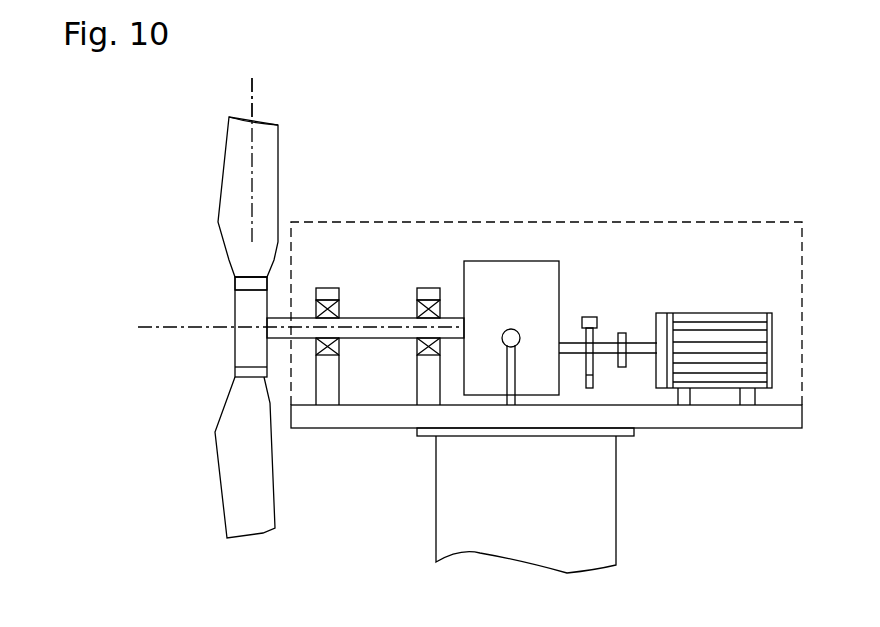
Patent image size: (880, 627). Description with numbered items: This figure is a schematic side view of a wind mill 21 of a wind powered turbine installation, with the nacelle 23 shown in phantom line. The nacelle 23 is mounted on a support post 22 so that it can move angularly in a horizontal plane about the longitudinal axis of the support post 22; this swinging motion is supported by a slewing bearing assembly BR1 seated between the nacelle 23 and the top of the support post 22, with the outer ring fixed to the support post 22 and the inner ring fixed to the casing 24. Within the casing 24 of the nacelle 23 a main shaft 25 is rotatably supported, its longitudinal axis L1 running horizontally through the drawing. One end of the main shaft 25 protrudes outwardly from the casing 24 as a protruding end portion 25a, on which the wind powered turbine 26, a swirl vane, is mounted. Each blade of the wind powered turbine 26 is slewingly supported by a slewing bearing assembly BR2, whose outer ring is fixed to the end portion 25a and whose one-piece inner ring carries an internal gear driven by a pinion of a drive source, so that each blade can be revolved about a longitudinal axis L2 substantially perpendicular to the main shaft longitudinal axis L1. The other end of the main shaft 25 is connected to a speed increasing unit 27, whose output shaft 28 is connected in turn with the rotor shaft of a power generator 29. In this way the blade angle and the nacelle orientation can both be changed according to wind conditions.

The wind mill 21 is at (190, 308).
The support post 22 is at (587, 538).
The nacelle 23 is at (534, 302).
The casing 24 is at (640, 217).
The main shaft 25 is at (380, 338).
The protruding end portion 25a is at (245, 297).
The wind powered turbine 26 is at (238, 178).
The speed increasing unit 27 is at (502, 270).
The output shaft 28 is at (610, 347).
The power generator 29 is at (720, 310).
The slewing bearing assembly BR1 is at (634, 436).
The slewing bearing assembly BR2 is at (240, 283).
The main shaft longitudinal axis L1 is at (163, 330).
The longitudinal axis L2 is at (252, 88).